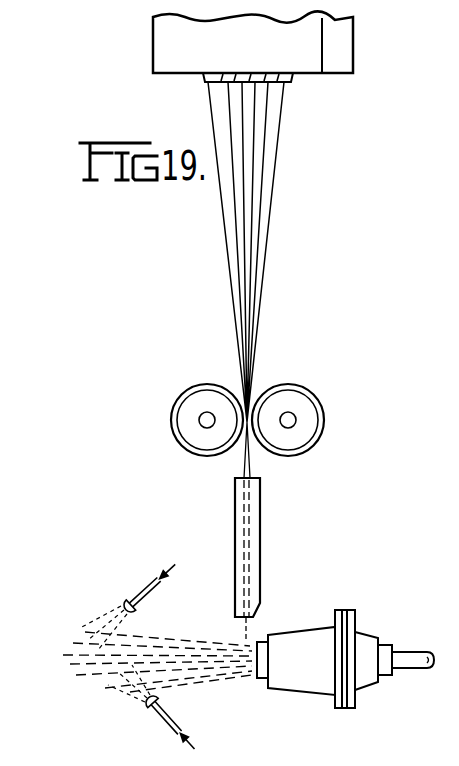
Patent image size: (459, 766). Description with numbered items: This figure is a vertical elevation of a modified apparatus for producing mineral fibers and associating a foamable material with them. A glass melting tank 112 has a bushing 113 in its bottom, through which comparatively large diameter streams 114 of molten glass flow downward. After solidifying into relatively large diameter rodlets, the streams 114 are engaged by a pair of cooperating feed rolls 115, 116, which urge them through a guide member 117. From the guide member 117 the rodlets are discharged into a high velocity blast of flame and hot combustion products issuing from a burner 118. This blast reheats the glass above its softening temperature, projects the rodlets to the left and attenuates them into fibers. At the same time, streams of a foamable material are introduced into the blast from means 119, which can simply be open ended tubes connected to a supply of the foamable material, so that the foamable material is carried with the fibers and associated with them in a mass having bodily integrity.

The glass melting tank 112 is at (360, 44).
The bushing 113 is at (295, 80).
The streams of molten glass 114 is at (254, 182).
The feed roll 115 is at (325, 427).
The feed roll 116 is at (177, 440).
The guide member 117 is at (261, 532).
The burner 118 is at (369, 627).
The means for introducing foamable material 119 is at (136, 598).